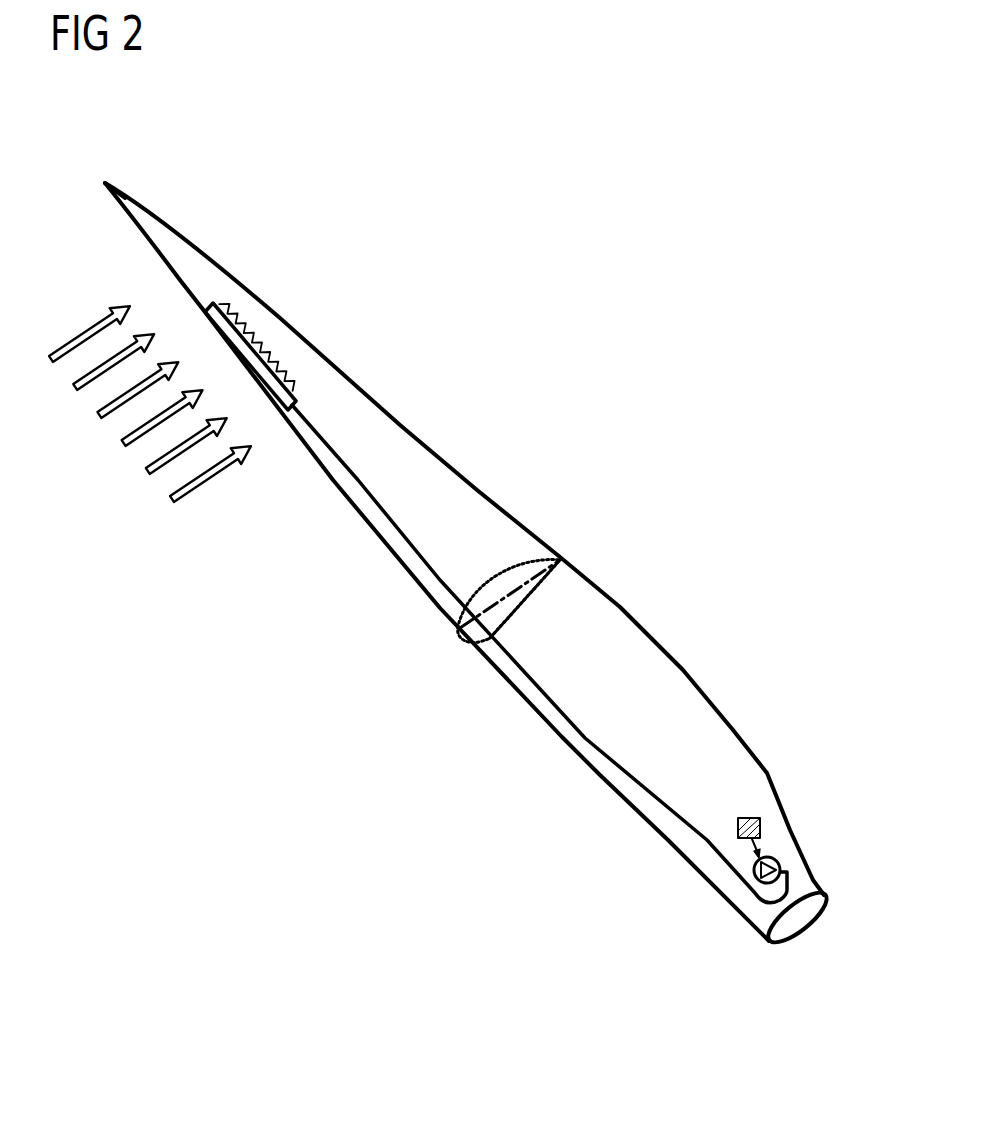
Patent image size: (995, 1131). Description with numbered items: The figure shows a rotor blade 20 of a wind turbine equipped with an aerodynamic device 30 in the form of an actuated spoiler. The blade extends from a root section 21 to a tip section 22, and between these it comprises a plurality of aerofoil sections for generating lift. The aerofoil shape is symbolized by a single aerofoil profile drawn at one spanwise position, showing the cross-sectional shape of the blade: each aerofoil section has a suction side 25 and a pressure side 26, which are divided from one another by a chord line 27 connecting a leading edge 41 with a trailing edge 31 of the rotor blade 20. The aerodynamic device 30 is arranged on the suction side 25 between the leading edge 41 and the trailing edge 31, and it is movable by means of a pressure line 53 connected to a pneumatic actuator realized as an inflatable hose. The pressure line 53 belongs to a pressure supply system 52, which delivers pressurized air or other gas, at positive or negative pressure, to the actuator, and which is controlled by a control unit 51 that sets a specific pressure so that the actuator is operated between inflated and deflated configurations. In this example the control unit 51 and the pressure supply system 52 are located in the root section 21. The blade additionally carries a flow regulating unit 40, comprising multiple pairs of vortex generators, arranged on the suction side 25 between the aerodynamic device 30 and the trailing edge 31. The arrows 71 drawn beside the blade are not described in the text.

The rotor blade 20 is at (450, 532).
The root section 21 is at (797, 883).
The tip section 22 is at (106, 182).
The suction side 25 is at (511, 570).
The pressure side 26 is at (533, 596).
The chord line 27 is at (500, 602).
The aerodynamic device 30 is at (219, 298).
The trailing edge 31 is at (684, 668).
The flow regulating unit 40 is at (272, 346).
The leading edge 41 is at (540, 717).
The control unit 51 is at (745, 816).
The pressure supply system 52 is at (771, 852).
The pressure line 53 is at (598, 748).
The wind flow 71 is at (212, 482).